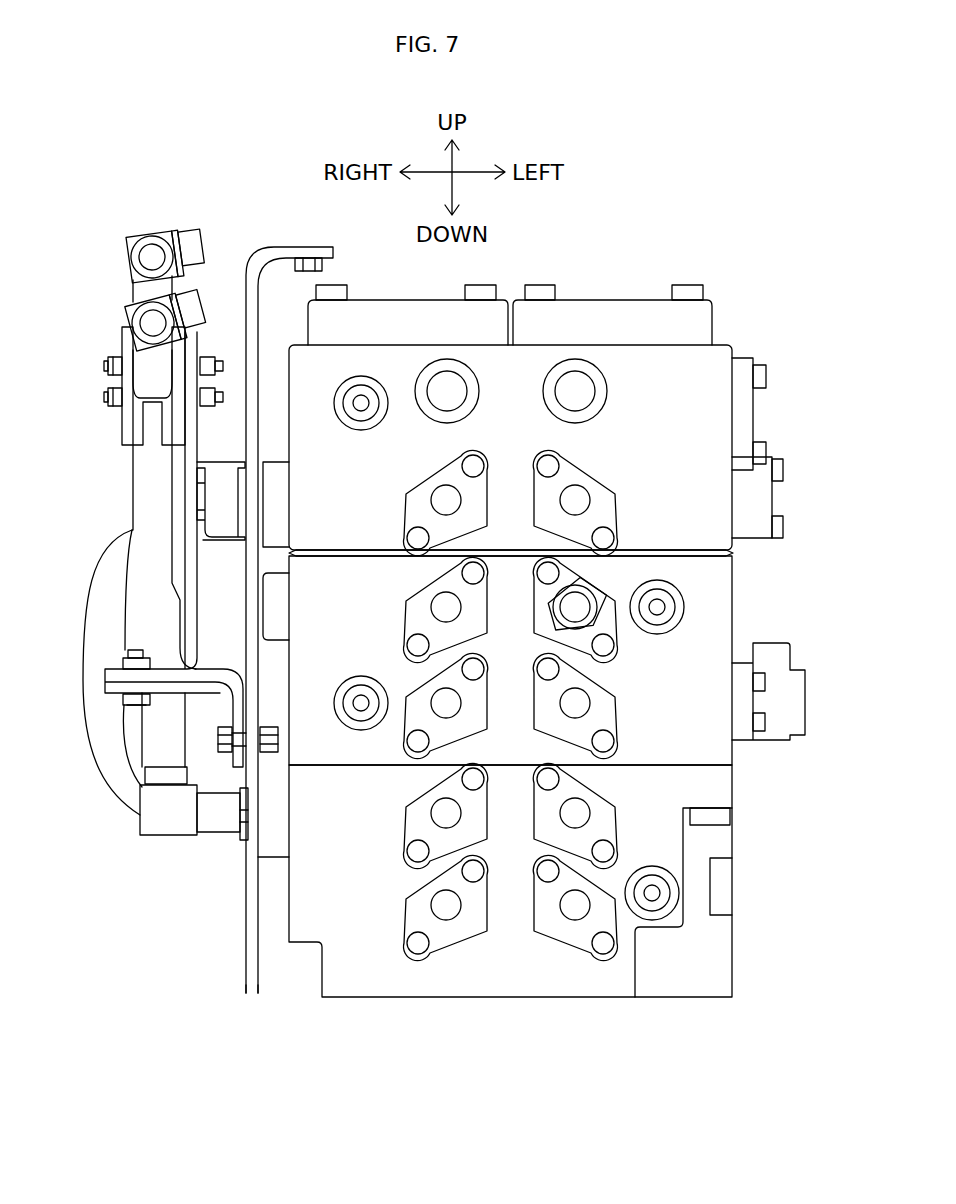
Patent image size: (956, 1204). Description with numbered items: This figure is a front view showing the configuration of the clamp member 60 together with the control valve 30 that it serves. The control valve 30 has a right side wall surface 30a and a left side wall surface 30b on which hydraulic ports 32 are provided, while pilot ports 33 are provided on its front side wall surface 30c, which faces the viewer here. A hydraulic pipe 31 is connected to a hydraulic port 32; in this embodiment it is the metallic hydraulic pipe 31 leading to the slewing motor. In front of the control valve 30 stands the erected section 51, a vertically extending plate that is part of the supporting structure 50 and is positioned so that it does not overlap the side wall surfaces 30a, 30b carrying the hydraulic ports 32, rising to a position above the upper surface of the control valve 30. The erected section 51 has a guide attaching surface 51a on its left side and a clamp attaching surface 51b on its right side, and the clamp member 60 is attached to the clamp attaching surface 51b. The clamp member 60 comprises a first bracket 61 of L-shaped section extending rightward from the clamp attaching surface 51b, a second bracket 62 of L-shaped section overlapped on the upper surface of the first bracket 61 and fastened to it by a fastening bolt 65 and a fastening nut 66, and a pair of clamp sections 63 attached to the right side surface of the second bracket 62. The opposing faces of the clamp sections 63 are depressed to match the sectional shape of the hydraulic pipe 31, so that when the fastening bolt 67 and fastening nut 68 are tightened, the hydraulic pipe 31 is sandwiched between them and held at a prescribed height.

The control valve 30 is at (735, 790).
The right side wall surface 30a is at (279, 672).
The left side wall surface 30b is at (733, 583).
The front side wall surface 30c is at (684, 478).
The hydraulic pipe 31 is at (127, 246).
The hydraulic port 32 is at (772, 490).
The pilot port 33 is at (557, 500).
The mounting plate assembly 50 is at (234, 962).
The erected section 51 is at (246, 915).
The guide attaching surface 51a is at (258, 990).
The clamp attaching surface 51b is at (246, 990).
The clamp member 60 is at (101, 355).
The first bracket 61 is at (218, 682).
The second bracket 62 is at (175, 483).
The clamp section 63 is at (162, 440).
The fastening bolt 65 is at (123, 700).
The fastening nut 66 is at (120, 663).
The fastening bolt 67 is at (108, 398).
The fastening nut 68 is at (215, 398).